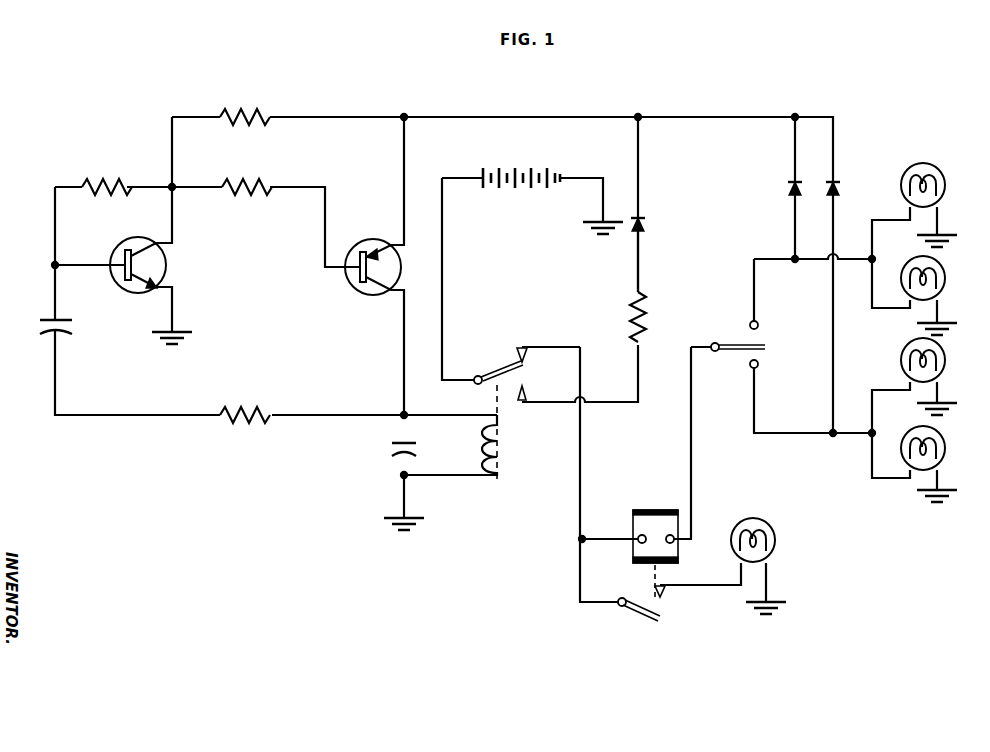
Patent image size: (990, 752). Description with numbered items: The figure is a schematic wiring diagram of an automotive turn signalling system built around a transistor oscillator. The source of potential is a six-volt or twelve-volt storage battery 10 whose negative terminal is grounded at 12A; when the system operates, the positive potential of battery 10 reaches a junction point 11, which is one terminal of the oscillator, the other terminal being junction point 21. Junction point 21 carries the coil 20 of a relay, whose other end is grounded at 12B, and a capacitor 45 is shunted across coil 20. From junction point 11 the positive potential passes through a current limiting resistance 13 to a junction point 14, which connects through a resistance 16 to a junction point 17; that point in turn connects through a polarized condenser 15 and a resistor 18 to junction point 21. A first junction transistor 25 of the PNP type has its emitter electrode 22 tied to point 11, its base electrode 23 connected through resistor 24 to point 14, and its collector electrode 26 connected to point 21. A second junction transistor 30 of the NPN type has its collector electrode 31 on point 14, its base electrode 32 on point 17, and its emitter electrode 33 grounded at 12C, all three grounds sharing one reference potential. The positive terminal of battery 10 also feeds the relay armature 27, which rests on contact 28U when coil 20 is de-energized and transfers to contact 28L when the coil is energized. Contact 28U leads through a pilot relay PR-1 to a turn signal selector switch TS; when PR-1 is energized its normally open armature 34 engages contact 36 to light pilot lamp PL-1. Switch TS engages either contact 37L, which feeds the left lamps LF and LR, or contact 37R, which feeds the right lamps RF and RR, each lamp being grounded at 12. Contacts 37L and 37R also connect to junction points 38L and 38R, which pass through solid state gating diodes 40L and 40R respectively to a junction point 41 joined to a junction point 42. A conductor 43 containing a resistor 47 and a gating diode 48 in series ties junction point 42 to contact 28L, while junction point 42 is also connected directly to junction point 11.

The storage battery 10 is at (530, 170).
The junction point 11 is at (404, 115).
The ground 12 is at (942, 235).
The ground 12A is at (600, 222).
The ground 12B is at (410, 518).
The ground 12C is at (178, 330).
The current limiting resistance 13 is at (232, 115).
The junction point 14 is at (172, 186).
The condenser 15 is at (70, 330).
The resistance 16 is at (98, 184).
The junction point 17 is at (55, 266).
The resistor 18 is at (234, 410).
The relay coil 20 is at (504, 456).
The junction point 21 is at (402, 416).
The emitter electrode 22 is at (386, 246).
The base electrode 23 is at (360, 262).
The resistor 24 is at (262, 184).
The first junction transistor 25 is at (431, 275).
The collector electrode 26 is at (385, 291).
The armature 27 is at (476, 386).
The contact 28U is at (516, 355).
The contact 28L is at (527, 392).
The second junction transistor 30 is at (198, 271).
The collector electrode 31 is at (150, 246).
The base electrode 32 is at (125, 262).
The emitter electrode 33 is at (150, 288).
The armature 34 is at (640, 612).
The contact 36 is at (666, 594).
The contact 37L is at (760, 326).
The contact 37R is at (759, 365).
The junction point 38L is at (793, 258).
The junction point 38R is at (830, 435).
The gating diode 40L is at (788, 190).
The gating diode 40R is at (838, 190).
The junction point 41 is at (795, 115).
The junction point 42 is at (638, 115).
The conductor 43 is at (642, 256).
The capacitor 45 is at (394, 452).
The resistor 47 is at (630, 324).
The gating diode 48 is at (646, 218).
The turn signal selector switch TS is at (730, 342).
The pilot relay PR-1 is at (652, 525).
The pilot lamp PL-1 is at (770, 512).
The left front signal lamp LF is at (935, 176).
The left rear signal lamp LR is at (935, 269).
The right front signal lamp RF is at (935, 351).
The right rear signal lamp RR is at (935, 439).